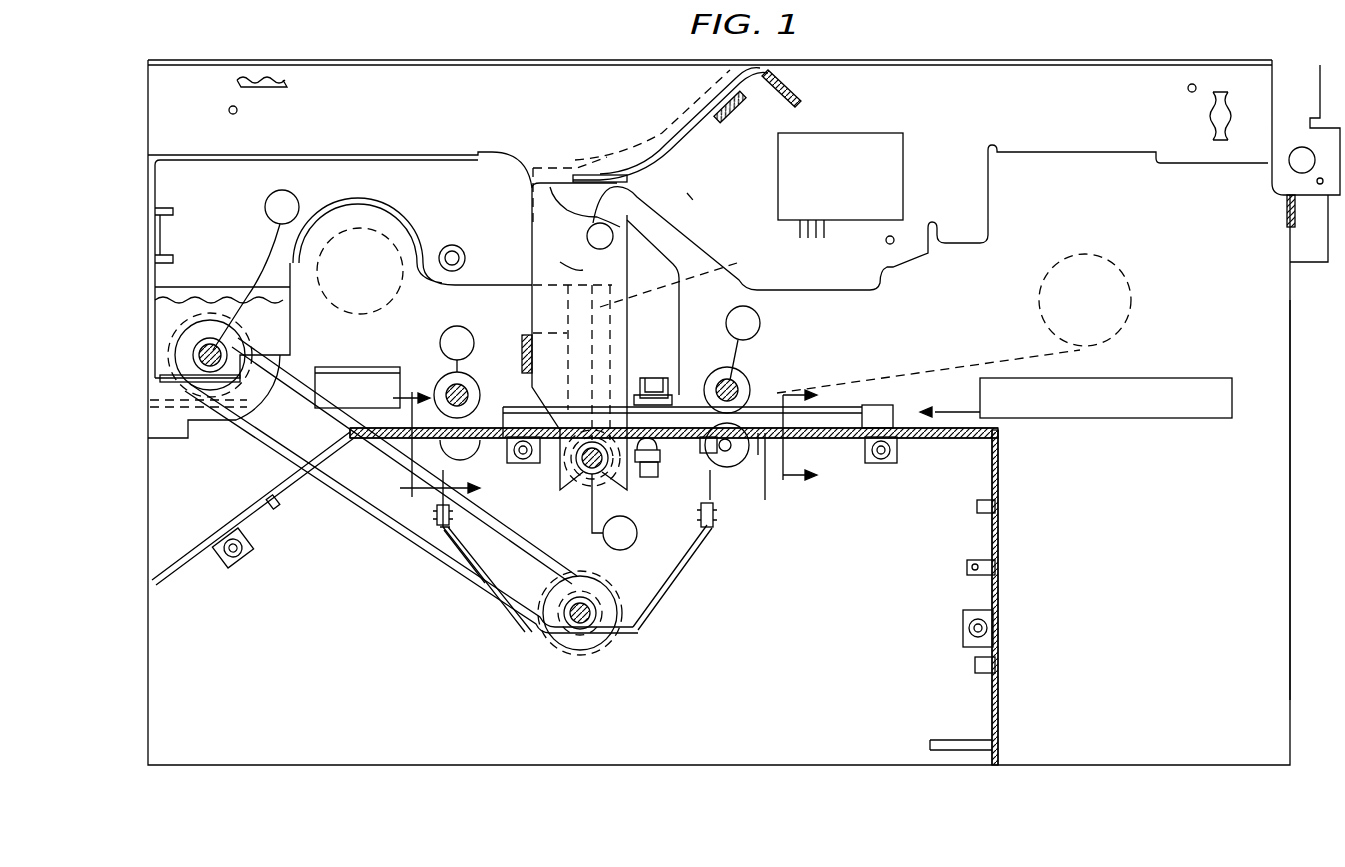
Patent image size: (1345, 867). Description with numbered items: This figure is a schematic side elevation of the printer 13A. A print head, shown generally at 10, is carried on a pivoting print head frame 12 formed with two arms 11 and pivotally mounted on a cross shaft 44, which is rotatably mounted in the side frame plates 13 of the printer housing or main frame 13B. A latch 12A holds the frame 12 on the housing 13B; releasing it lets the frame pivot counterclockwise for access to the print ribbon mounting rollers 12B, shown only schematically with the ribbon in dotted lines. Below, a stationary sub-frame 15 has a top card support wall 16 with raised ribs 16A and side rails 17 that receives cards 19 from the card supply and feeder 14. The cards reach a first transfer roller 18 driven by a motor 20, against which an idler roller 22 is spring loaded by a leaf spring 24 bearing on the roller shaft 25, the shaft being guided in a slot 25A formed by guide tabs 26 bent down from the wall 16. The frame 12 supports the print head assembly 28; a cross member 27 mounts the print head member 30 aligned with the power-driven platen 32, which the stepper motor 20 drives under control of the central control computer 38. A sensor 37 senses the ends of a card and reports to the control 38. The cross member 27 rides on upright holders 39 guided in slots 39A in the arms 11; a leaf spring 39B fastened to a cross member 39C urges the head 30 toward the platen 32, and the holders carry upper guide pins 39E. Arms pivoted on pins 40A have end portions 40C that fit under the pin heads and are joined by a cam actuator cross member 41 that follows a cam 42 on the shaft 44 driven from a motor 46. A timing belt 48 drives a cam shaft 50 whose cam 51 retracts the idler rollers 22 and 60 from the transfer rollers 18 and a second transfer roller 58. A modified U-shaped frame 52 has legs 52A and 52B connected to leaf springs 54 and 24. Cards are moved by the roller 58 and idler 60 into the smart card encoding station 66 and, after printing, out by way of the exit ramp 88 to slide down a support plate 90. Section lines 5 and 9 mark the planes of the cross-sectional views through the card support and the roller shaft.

The section line 5- 5 is at (811, 437).
The section line 9- 9 is at (425, 446).
The print head 10 is at (652, 305).
The arm 11 is at (1067, 128).
The pivoting frame 12 is at (467, 177).
The latch 12A is at (1293, 233).
The print ribbon mounting rollers 12B is at (365, 231).
The side frame plates 13 is at (487, 745).
The printer 13A is at (1063, 735).
The printer housing 13B is at (1260, 485).
The card supply and feeder 14 is at (1083, 420).
The stationary sub-frame 15 is at (1005, 530).
The card support wall 16 is at (928, 440).
The raised rails 16A is at (882, 410).
The side rails 17 is at (503, 422).
The first transfer roller 18 is at (735, 380).
The card 19 is at (777, 430).
The stepper motor 20 is at (463, 325).
The idler roller 22 is at (742, 455).
The leaf spring 24 is at (765, 440).
The roller shaft 25 is at (723, 470).
The slot 25A is at (717, 455).
The guide tabs 26 is at (703, 455).
The cross member 27 is at (518, 350).
The print head assembly 28 is at (645, 273).
The print head member 30 is at (717, 270).
The platen 32 is at (588, 478).
The sensor 37 is at (667, 380).
The central control computer 38 is at (903, 148).
The print head holder guides 39 is at (548, 165).
The slot 39A is at (627, 198).
The leaf spring 39B is at (650, 170).
The cross member 39C is at (800, 95).
The upper guide pins 39E is at (588, 240).
The pins 40A is at (443, 250).
The end portions 40C is at (583, 270).
The cam actuator cross member 41 is at (155, 183).
The cam 42 is at (237, 382).
The cross shaft 44 is at (212, 338).
The motor 46 is at (290, 190).
The timing belt 48 is at (377, 510).
The cam shaft 50 is at (590, 620).
The cam 51 is at (560, 650).
The frame 52 is at (500, 627).
The leg 52A is at (663, 590).
The leg 52B is at (448, 548).
The leaf spring 54 is at (493, 458).
The second transfer roller 58 is at (445, 388).
The idler roller 60 is at (412, 467).
The smart card encoding station 66 is at (357, 360).
The exit ramp 88 is at (313, 417).
The support plate 90 is at (287, 500).